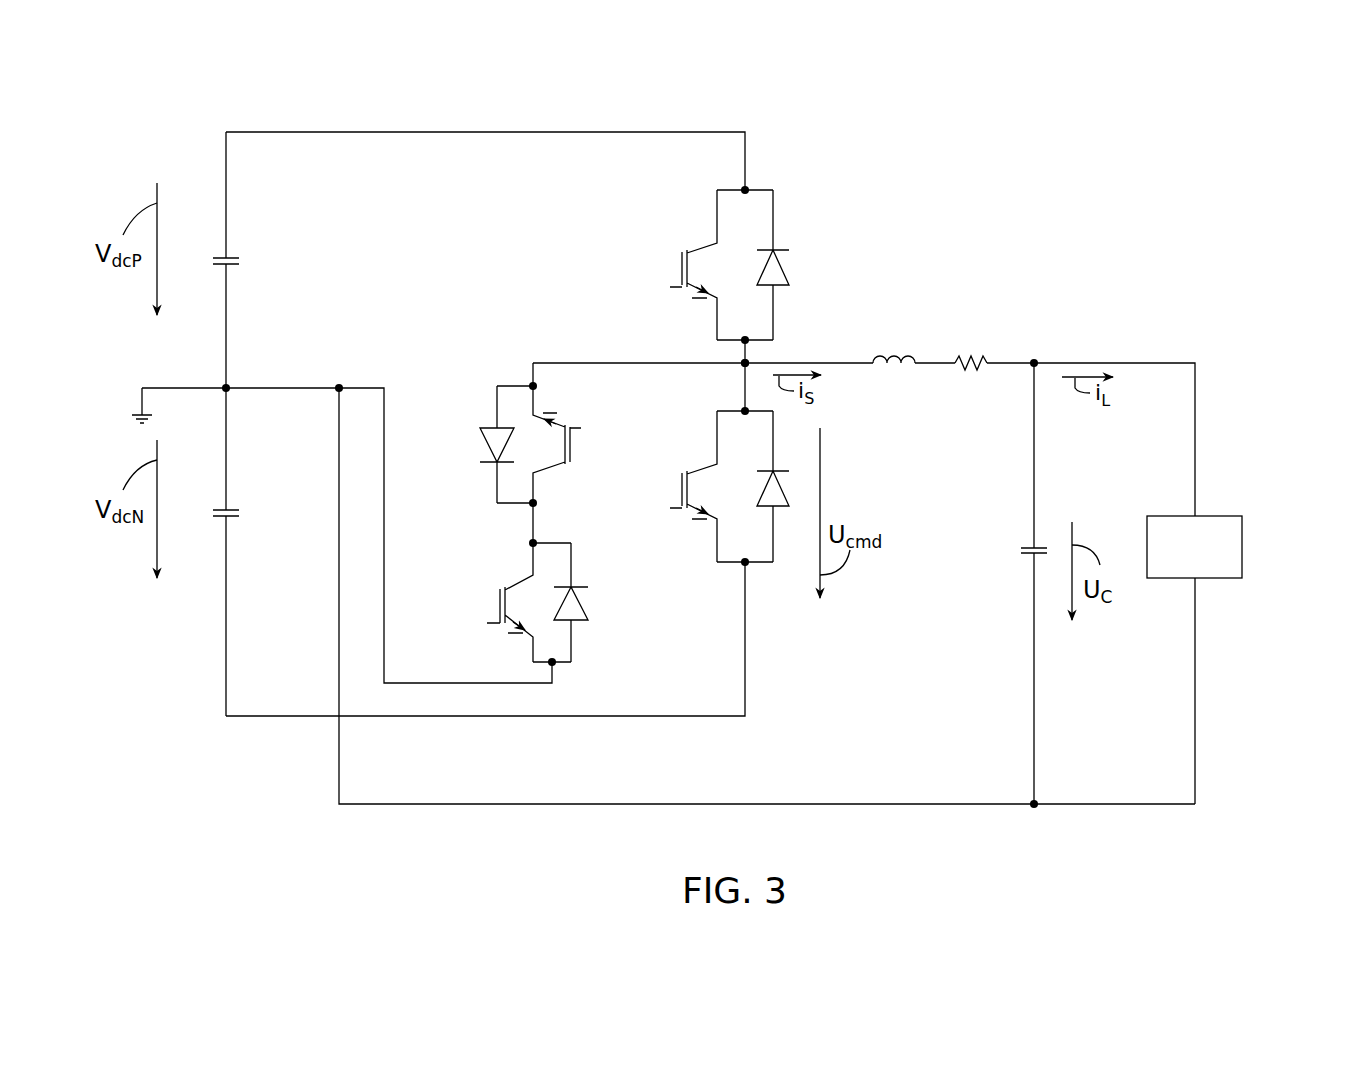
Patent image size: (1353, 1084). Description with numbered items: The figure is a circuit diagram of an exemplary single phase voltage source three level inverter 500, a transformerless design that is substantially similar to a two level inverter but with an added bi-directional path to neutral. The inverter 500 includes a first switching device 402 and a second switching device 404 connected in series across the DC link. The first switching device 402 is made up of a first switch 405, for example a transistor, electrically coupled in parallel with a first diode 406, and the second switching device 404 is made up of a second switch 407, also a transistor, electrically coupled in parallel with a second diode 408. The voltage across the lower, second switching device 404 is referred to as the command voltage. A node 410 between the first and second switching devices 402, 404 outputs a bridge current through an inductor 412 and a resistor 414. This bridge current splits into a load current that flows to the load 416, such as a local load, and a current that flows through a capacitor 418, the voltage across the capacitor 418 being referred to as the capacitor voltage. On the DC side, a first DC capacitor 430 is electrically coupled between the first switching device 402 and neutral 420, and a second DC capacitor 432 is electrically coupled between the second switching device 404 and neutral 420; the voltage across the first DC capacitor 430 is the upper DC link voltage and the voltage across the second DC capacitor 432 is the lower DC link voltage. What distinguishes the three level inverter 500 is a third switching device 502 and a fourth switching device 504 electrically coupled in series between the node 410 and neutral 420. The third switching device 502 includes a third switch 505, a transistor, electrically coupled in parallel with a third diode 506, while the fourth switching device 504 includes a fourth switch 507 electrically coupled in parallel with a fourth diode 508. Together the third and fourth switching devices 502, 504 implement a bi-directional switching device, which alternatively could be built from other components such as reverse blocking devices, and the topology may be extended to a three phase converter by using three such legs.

The single phase voltage source three level inverter 500 is at (1070, 140).
The first switching device 402 is at (776, 231).
The second switching device 404 is at (784, 483).
The first switch 405 is at (704, 245).
The first diode 406 is at (784, 266).
The second switch 407 is at (704, 466).
The second diode 408 is at (784, 487).
The node 410 is at (740, 362).
The inductor 412 is at (893, 352).
The resistor 414 is at (968, 352).
The load 416 is at (1243, 546).
The capacitor 418 is at (1025, 548).
The neutral 420 is at (142, 388).
The first DC capacitor 430 is at (238, 258).
The second DC capacitor 432 is at (238, 510).
The third switching device 502 is at (497, 397).
The fourth switching device 504 is at (570, 606).
The third switch 505 is at (550, 466).
The third diode 506 is at (479, 441).
The fourth switch 507 is at (520, 583).
The fourth diode 508 is at (590, 603).